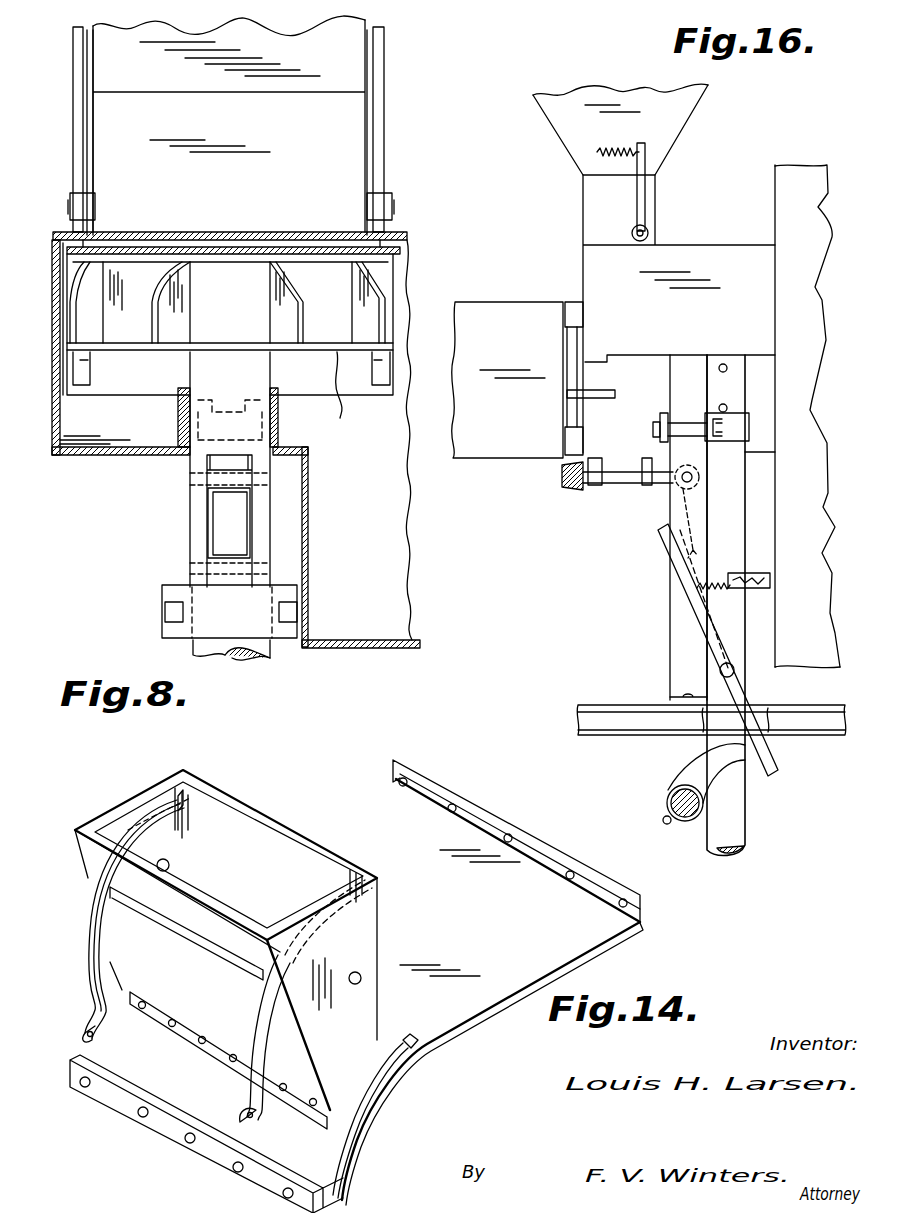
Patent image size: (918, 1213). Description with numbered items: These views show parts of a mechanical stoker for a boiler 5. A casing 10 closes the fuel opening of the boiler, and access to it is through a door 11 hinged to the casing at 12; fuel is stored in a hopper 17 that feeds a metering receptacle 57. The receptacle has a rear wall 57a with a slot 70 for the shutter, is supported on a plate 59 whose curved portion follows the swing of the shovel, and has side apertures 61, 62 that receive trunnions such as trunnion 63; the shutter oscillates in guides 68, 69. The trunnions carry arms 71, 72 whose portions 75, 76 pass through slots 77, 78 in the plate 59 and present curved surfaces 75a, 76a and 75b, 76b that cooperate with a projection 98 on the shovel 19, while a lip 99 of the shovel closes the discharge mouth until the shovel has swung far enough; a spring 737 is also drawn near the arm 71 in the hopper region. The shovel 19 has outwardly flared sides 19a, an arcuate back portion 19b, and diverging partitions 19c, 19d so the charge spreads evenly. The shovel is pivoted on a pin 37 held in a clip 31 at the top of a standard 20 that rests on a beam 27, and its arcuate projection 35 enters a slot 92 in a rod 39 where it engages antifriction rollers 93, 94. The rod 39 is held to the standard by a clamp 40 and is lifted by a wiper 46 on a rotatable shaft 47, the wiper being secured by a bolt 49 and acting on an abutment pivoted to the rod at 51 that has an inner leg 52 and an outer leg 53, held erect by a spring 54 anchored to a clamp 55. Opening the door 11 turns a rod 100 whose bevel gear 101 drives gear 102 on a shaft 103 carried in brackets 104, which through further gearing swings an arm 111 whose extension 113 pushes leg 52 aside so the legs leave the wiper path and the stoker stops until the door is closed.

In FIG. 16, the boiler 5 is at (802, 180).
In FIG. 8, the casing 10 is at (400, 498).
In FIG. 16, the casing 10 is at (755, 292).
In FIG. 16, the door 11 is at (475, 316).
In FIG. 16, the hinge connection 12 is at (584, 318).
In FIG. 16, the hopper 17 is at (688, 106).
In FIG. 8, the shovel 19 is at (230, 227).
In FIG. 8, the shovel sides 19a is at (85, 333).
In FIG. 8, the shovel back portion 19b is at (317, 272).
In FIG. 8, the partition 19c is at (290, 328).
In FIG. 8, the partition 19d is at (172, 320).
In FIG. 16, the standard 20 is at (668, 622).
In FIG. 16, the beam 27 is at (585, 718).
In FIG. 8, the clip 31 is at (280, 438).
In FIG. 8, the arcuate projection 35 is at (235, 532).
In FIG. 8, the pin 37 is at (178, 418).
In FIG. 8, the rod 39 is at (258, 374).
In FIG. 16, the rod 39 is at (733, 524).
In FIG. 8, the clamp 40 is at (258, 632).
In FIG. 16, the clamp 40 is at (748, 426).
In FIG. 16, the wiper element 46 is at (690, 768).
In FIG. 16, the rotatable shaft 47 is at (667, 800).
In FIG. 16, the bolt 49 is at (668, 825).
In FIG. 16, the pivotal connection 51 is at (735, 675).
In FIG. 16, the inner leg 52 is at (660, 538).
In FIG. 16, the outer leg 53 is at (776, 763).
In FIG. 16, the spring 54 is at (717, 564).
In FIG. 16, the clamp 55 is at (771, 581).
In FIG. 14, the receptacle 57 is at (226, 940).
In FIG. 14, the rear wall 57a is at (245, 920).
In FIG. 8, the plate 59 is at (222, 250).
In FIG. 14, the plate 59 is at (420, 770).
In FIG. 14, the aperture 61 is at (362, 975).
In FIG. 14, the aperture 62 is at (170, 860).
In FIG. 16, the trunnion 63 is at (649, 231).
In FIG. 14, the guide 68 is at (252, 1012).
In FIG. 14, the guide 69 is at (88, 902).
In FIG. 14, the slot 70 is at (183, 940).
In FIG. 8, the arm 71 is at (82, 107).
In FIG. 16, the arm 71 is at (646, 190).
In FIG. 8, the arm 72 is at (386, 106).
In FIG. 8, the arm portion 75 is at (76, 220).
In FIG. 8, the curved surface 75a is at (90, 358).
In FIG. 8, the curved surface 75b is at (110, 247).
In FIG. 8, the arm portion 76 is at (395, 226).
In FIG. 8, the curved surface 76a is at (387, 354).
In FIG. 8, the curved surface 76b is at (385, 248).
In FIG. 8, the slot 77 is at (85, 380).
In FIG. 14, the slot 77 is at (403, 1036).
In FIG. 8, the slot 78 is at (387, 372).
In FIG. 14, the slot 78 is at (112, 1055).
In FIG. 8, the slot 92 is at (216, 522).
In FIG. 8, the antifriction roller 93 is at (235, 497).
In FIG. 8, the antifriction roller 94 is at (242, 580).
In FIG. 8, the projection 98 is at (82, 268).
In FIG. 8, the lip 99 is at (242, 262).
In FIG. 16, the rod 100 is at (577, 374).
In FIG. 16, the bevel gear 101 is at (570, 489).
In FIG. 16, the bevel gear 102 is at (596, 490).
In FIG. 16, the shaft 103 is at (632, 484).
In FIG. 16, the bracket 104 is at (603, 466).
In FIG. 16, the arm 111 is at (696, 507).
In FIG. 16, the extension 113 is at (698, 538).
In FIG. 16, the spring 737 is at (618, 136).